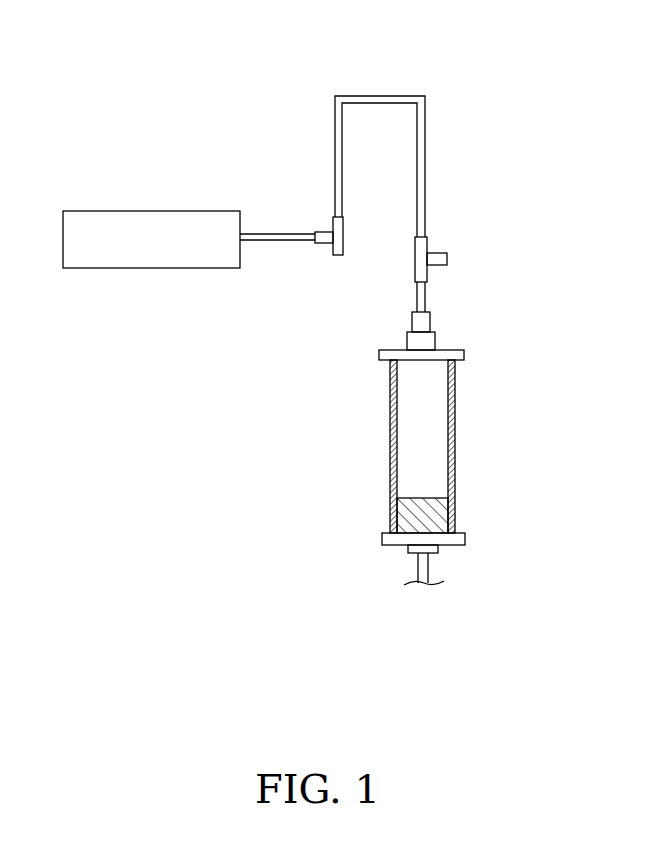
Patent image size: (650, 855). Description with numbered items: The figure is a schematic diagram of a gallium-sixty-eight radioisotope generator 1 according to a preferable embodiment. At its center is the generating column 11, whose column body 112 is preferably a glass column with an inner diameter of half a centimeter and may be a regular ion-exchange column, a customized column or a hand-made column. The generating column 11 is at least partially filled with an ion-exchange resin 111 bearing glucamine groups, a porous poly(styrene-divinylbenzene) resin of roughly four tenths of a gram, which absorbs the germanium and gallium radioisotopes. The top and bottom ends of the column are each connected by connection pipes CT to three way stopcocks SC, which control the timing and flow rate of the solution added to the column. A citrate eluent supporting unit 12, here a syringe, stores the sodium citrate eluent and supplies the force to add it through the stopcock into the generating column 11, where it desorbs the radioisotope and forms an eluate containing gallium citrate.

The liquid supply system 1 is at (86, 80).
The citrate eluent supporting unit 12 is at (87, 220).
The connection pipe CT is at (365, 100).
The three way stopcock SC is at (338, 256).
The generating column 11 is at (457, 432).
The column body 112 is at (455, 446).
The ion-exchange resin 111 is at (437, 515).